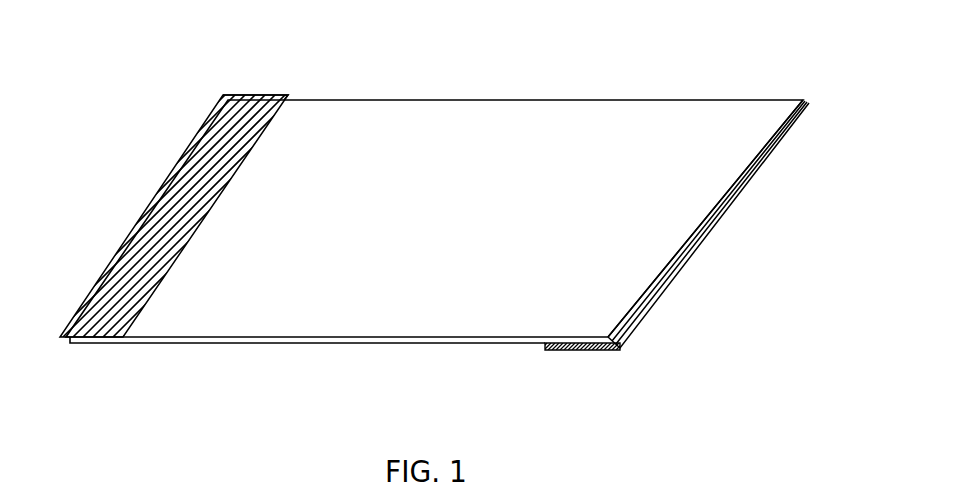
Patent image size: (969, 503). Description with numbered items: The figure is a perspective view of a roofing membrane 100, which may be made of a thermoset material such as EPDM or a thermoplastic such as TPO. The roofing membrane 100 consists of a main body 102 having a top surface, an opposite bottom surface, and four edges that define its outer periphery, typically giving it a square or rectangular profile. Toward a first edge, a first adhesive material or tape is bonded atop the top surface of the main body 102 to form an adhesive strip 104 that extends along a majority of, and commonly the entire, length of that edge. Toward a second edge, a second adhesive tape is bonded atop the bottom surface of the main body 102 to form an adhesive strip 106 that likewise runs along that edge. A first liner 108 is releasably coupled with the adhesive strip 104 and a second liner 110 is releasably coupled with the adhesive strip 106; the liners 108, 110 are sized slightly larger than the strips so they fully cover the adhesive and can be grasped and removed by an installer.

The roofing membrane 100 is at (797, 145).
The main body 102 is at (353, 283).
The adhesive strip 104 is at (197, 162).
The adhesive strip 106 is at (638, 313).
The first liner 108 is at (268, 94).
The second liner 110 is at (548, 350).